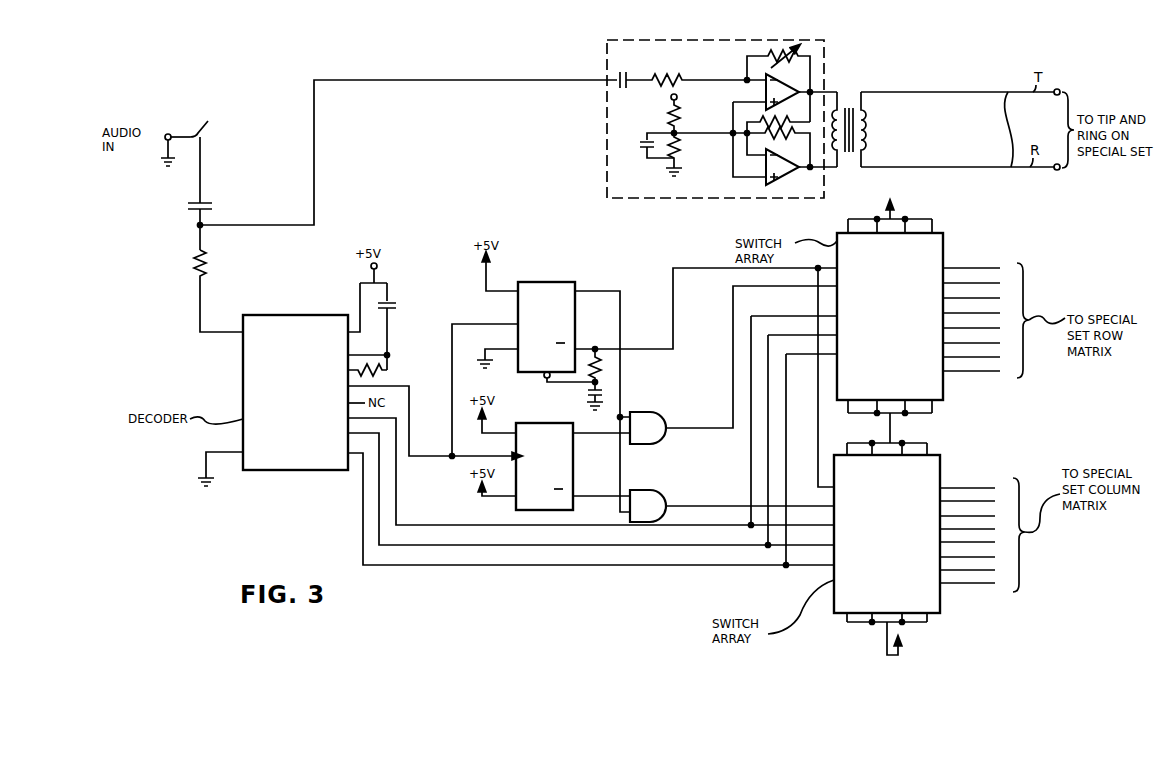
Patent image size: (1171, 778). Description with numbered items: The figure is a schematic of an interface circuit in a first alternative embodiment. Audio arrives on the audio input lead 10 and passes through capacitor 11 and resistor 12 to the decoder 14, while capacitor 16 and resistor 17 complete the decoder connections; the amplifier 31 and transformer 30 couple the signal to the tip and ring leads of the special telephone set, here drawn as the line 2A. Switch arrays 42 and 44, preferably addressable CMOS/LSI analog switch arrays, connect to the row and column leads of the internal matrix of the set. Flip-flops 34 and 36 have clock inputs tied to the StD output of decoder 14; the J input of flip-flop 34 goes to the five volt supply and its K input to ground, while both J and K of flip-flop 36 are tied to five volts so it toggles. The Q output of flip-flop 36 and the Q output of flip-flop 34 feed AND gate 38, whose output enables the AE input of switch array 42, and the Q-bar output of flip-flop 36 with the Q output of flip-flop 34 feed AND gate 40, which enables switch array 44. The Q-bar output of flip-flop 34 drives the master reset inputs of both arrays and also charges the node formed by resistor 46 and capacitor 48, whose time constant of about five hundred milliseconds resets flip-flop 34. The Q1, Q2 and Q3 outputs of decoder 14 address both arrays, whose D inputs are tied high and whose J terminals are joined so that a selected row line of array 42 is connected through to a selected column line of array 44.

The audio input lead 10 is at (204, 151).
The capacitor 11 is at (207, 204).
The resistor 12 is at (207, 262).
The decoder 14 is at (278, 316).
The capacitor 16 is at (392, 301).
The resistor 17 is at (390, 367).
The transformer 30 is at (848, 98).
The amplifier 31 is at (826, 45).
The flip-flop 34 is at (556, 282).
The flip-flop 36 is at (574, 493).
The AND gate 38 is at (672, 420).
The AND gate 40 is at (674, 496).
The switch array 42 is at (945, 254).
The switch array 44 is at (942, 472).
The resistor 46 is at (605, 371).
The capacitor 48 is at (604, 395).
The tip and ring line to special set 2A is at (1009, 92).